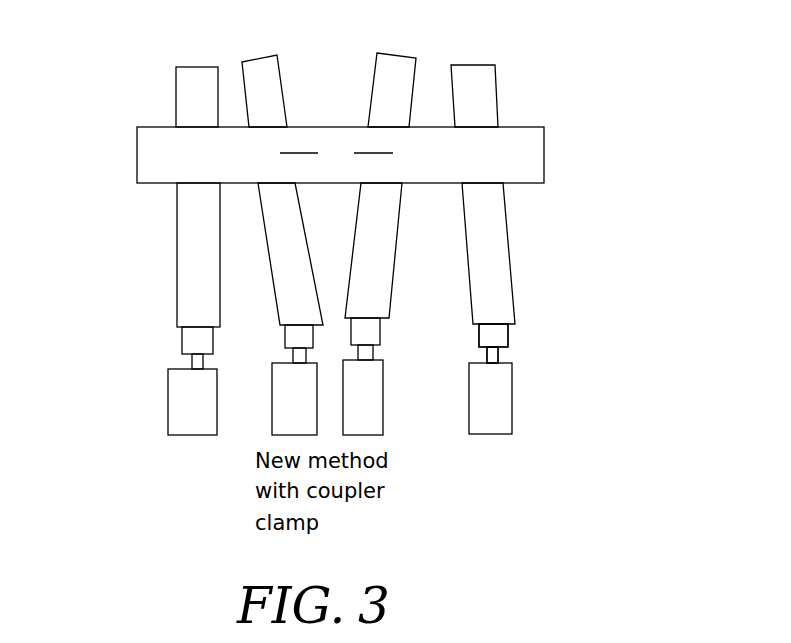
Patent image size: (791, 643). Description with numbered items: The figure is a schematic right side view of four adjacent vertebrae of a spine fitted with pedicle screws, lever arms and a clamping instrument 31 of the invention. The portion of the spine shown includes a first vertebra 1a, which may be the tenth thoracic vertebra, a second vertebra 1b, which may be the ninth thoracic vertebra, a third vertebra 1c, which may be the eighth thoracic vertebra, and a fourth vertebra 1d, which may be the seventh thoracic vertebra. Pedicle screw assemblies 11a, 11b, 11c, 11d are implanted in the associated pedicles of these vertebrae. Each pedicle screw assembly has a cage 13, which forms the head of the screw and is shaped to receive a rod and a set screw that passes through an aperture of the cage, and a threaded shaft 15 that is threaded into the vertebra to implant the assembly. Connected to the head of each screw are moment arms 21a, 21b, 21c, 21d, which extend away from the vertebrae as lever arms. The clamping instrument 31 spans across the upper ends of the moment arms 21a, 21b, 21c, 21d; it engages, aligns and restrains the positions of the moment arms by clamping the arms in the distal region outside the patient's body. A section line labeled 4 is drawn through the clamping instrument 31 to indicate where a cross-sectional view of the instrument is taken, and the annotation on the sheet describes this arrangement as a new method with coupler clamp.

The clamping instrument 31 is at (578, 126).
The moment arm 21a is at (175, 91).
The moment arm 21b is at (245, 72).
The moment arm 21c is at (372, 72).
The moment arm 21d is at (452, 80).
The pedicle screw assembly 11a is at (181, 343).
The pedicle screw assembly 11b is at (285, 337).
The pedicle screw assembly 11c is at (381, 333).
The pedicle screw assembly 11d is at (479, 337).
The cage 13 is at (509, 333).
The threaded shaft 15 is at (499, 355).
The first vertebra 1a is at (186, 436).
The second vertebra 1b is at (284, 436).
The third vertebra 1c is at (372, 432).
The fourth vertebra 1d is at (497, 435).
The section line 4- 4 is at (336, 184).